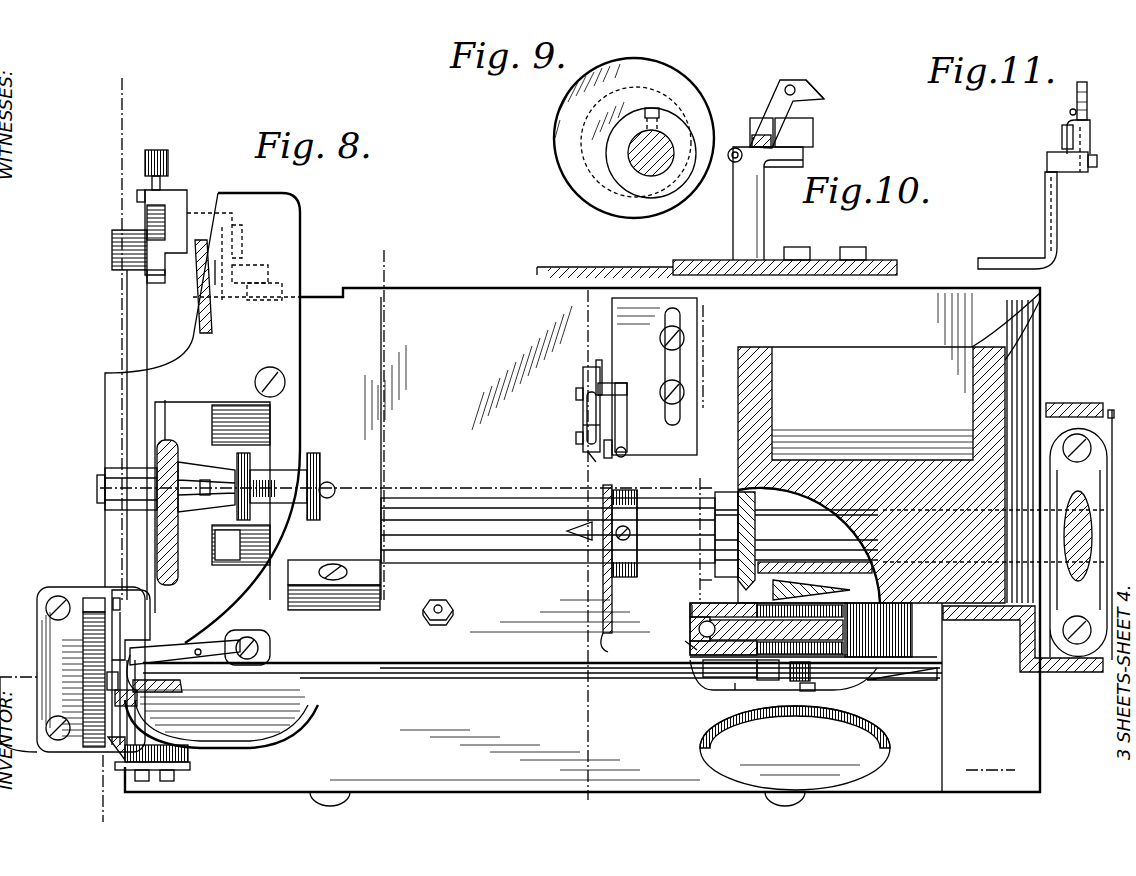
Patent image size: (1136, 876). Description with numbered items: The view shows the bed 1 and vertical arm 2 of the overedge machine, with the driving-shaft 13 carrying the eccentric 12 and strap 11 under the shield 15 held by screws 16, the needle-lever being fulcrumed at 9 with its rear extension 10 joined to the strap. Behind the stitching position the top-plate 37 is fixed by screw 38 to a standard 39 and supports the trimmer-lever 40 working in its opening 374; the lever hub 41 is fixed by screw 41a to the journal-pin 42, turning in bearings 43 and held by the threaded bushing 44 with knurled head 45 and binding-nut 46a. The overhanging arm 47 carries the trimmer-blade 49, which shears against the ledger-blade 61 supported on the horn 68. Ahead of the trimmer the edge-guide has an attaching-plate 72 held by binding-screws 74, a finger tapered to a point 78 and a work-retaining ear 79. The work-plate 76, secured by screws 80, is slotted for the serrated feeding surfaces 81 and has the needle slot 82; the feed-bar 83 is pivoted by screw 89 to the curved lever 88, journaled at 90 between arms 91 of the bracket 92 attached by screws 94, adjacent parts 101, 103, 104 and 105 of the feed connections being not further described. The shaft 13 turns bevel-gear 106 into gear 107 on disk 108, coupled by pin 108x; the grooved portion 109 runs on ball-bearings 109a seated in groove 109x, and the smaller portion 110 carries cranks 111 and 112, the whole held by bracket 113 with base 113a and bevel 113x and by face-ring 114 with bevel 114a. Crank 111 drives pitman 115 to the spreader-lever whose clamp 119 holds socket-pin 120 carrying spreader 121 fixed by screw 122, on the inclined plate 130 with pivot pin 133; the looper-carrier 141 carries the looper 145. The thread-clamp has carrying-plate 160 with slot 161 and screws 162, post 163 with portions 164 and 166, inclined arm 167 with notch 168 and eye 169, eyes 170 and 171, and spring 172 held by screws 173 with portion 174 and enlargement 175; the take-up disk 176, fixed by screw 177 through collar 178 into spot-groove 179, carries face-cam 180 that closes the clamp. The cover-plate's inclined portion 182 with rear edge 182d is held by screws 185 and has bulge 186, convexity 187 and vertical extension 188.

In FIG. 8, the bed 1 is at (455, 345).
In FIG. 10, the bed 1 is at (655, 276).
In FIG. 8, the vertical arm 2 is at (835, 432).
In FIG. 8, the fulcrum 9 is at (730, 587).
In FIG. 8, the rear extension 10 is at (725, 336).
In FIG. 8, the eccentric strap 11 is at (1078, 615).
In FIG. 8, the eccentric 12 is at (1078, 462).
In FIG. 8, the driving-shaft 13 is at (1017, 778).
In FIG. 9, the driving-shaft 13 is at (632, 173).
In FIG. 8, the shield 15 is at (606, 816).
In FIG. 8, the screws 16 is at (90, 804).
In FIG. 8, the top-plate 37 is at (290, 327).
In FIG. 8, the screw 38 is at (287, 377).
In FIG. 8, the standard 39 is at (275, 412).
In FIG. 8, the trimmer-lever 40 is at (178, 430).
In FIG. 8, the hub 41 is at (212, 468).
In FIG. 8, the screw 41a is at (205, 470).
In FIG. 8, the journal-pin 42 is at (335, 490).
In FIG. 8, the bearings 43 is at (283, 470).
In FIG. 8, the screw-threaded bushing 44 is at (262, 510).
In FIG. 8, the knurled head 45 is at (243, 520).
In FIG. 8, the nut 46a is at (322, 476).
In FIG. 8, the overhanging arm 47 is at (183, 686).
In FIG. 8, the trimmer-blade 49 is at (138, 698).
In FIG. 8, the ledger-blade 61 is at (108, 676).
In FIG. 8, the horn 68 is at (35, 708).
In FIG. 8, the attaching-plate 72 is at (188, 764).
In FIG. 8, the binding-screws 74 is at (168, 782).
In FIG. 8, the work-plate 76 is at (42, 632).
In FIG. 8, the point 78 is at (83, 692).
In FIG. 8, the work-retaining ear 79 is at (108, 752).
In FIG. 8, the screws 80 is at (55, 740).
In FIG. 8, the serrated feeding surfaces 81 is at (92, 600).
In FIG. 8, the open-sided slot 82 is at (131, 667).
In FIG. 8, the feed-bar 83 is at (125, 312).
In FIG. 8, the curved lever 88 is at (147, 215).
In FIG. 8, the screw 89 is at (112, 235).
In FIG. 8, the journal 90 is at (243, 232).
In FIG. 8, the arms 91 is at (230, 305).
In FIG. 8, the supporting-bracket 92 is at (158, 290).
In FIG. 8, the screws 94 is at (267, 272).
In FIG. 8, the line 101 is at (218, 285).
In FIG. 8, the clamp block 103 is at (205, 188).
In FIG. 8, the nub 104 is at (138, 195).
In FIG. 8, the knob 105 is at (166, 142).
In FIG. 8, the bevel-gear 106 is at (728, 500).
In FIG. 8, the bevel-gear 107 is at (805, 562).
In FIG. 8, the disk 108 is at (800, 600).
In FIG. 8, the pin 108x is at (760, 594).
In FIG. 8, the enlarged circular grooved portion 109 is at (768, 629).
In FIG. 8, the ball-bearings 109a is at (692, 614).
In FIG. 8, the groove 109x is at (782, 672).
In FIG. 8, the smaller circular portion 110 is at (800, 650).
In FIG. 8, the crank 111 is at (815, 667).
In FIG. 8, the second crank 112 is at (740, 690).
In FIG. 8, the bracket 113 is at (915, 642).
In FIG. 8, the base 113a is at (1018, 652).
In FIG. 8, the circumferential bevel 113x is at (705, 584).
In FIG. 8, the face-ring 114 is at (682, 650).
In FIG. 8, the inner circumferential bevel 114a is at (698, 631).
In FIG. 8, the pitman 115 is at (715, 680).
In FIG. 8, the clamp-portion 119 is at (268, 648).
In FIG. 8, the socket-pin 120 is at (249, 636).
In FIG. 8, the spreader 121 is at (222, 640).
In FIG. 8, the screw 122 is at (318, 607).
In FIG. 8, the inclined supporting-plate 130 is at (560, 601).
In FIG. 8, the pin 133 is at (470, 599).
In FIG. 8, the looper-carrier 141 is at (198, 648).
In FIG. 8, the looper 145 is at (165, 648).
In FIG. 8, the carrying-plate 160 is at (612, 330).
In FIG. 10, the carrying-plate 160 is at (880, 262).
In FIG. 11, the carrying-plate 160 is at (1003, 262).
In FIG. 8, the longitudinal slot 161 is at (666, 363).
In FIG. 8, the screws 162 is at (670, 400).
In FIG. 10, the screws 162 is at (800, 248).
In FIG. 8, the post 163 is at (808, 695).
In FIG. 10, the post 163 is at (733, 225).
In FIG. 11, the post 163 is at (1058, 231).
In FIG. 8, the lateral extension 164 is at (627, 438).
In FIG. 10, the lateral extension 164 is at (803, 160).
In FIG. 11, the lateral extension 164 is at (1048, 162).
In FIG. 8, the horizontal portion 166 is at (598, 365).
In FIG. 11, the horizontal portion 166 is at (1080, 172).
In FIG. 8, the inclined guide-arm 167 is at (583, 431).
In FIG. 10, the inclined guide-arm 167 is at (788, 93).
In FIG. 11, the inclined guide-arm 167 is at (1072, 113).
In FIG. 10, the V-shaped notch 168 is at (826, 99).
In FIG. 11, the V-shaped notch 168 is at (1077, 95).
In FIG. 10, the thread-eye 169 is at (793, 86).
In FIG. 8, the thread-eye 170 is at (626, 458).
In FIG. 10, the thread-eye 170 is at (730, 166).
In FIG. 8, the thread-eye 171 is at (588, 457).
In FIG. 8, the spring 172 is at (585, 412).
In FIG. 8, the screws 173 is at (577, 444).
In FIG. 11, the screws 173 is at (1093, 165).
In FIG. 8, the spring extension 174 is at (630, 380).
In FIG. 10, the spring extension 174 is at (815, 130).
In FIG. 11, the spring extension 174 is at (1090, 137).
In FIG. 8, the enlargement 175 is at (607, 459).
In FIG. 10, the enlargement 175 is at (758, 136).
In FIG. 11, the enlargement 175 is at (1062, 136).
In FIG. 8, the take-up and pull-off disk 176 is at (650, 607).
In FIG. 9, the take-up and pull-off disk 176 is at (554, 130).
In FIG. 8, the screw 177 is at (568, 529).
In FIG. 9, the screw 177 is at (650, 110).
In FIG. 8, the supporting-collar 178 is at (640, 508).
In FIG. 9, the supporting-collar 178 is at (660, 198).
In FIG. 8, the spot-groove 179 is at (680, 558).
In FIG. 8, the face-cam 180 is at (611, 646).
In FIG. 9, the face-cam 180 is at (580, 160).
In FIG. 8, the inclined portion 182 is at (515, 755).
In FIG. 8, the base top 182d is at (522, 668).
In FIG. 8, the screws 185 is at (790, 806).
In FIG. 8, the circular bulge 186 is at (795, 748).
In FIG. 8, the semi-circular convexity 187 is at (315, 710).
In FIG. 8, the vertical portion 188 is at (542, 681).
In FIG. 8, the arm 374 is at (180, 410).